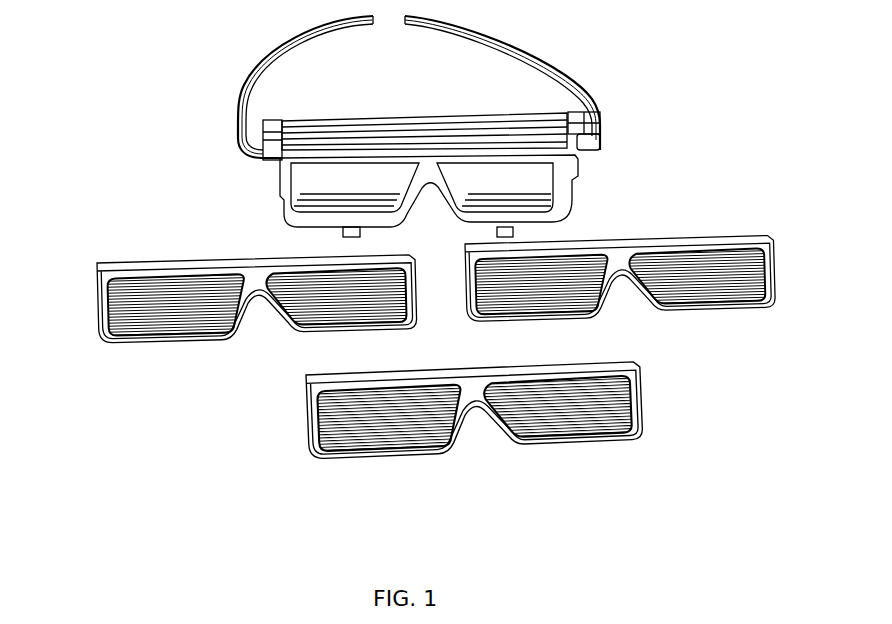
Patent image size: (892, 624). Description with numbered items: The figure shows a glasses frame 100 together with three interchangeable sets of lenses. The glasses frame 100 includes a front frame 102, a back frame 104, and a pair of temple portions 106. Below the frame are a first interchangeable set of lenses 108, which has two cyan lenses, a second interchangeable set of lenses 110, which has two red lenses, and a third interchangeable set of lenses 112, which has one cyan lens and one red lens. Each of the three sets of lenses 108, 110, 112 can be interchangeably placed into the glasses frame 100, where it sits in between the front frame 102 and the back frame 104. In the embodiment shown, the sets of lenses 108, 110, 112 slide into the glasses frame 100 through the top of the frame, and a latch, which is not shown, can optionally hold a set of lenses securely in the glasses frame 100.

The glasses frame 100 is at (240, 140).
The front frame 102 is at (593, 152).
The back frame 104 is at (600, 123).
The pair of temple portions 106 is at (257, 63).
The first interchangeable set of lenses 108 is at (755, 268).
The second interchangeable set of lenses 110 is at (125, 348).
The third interchangeable set of lenses 112 is at (627, 463).